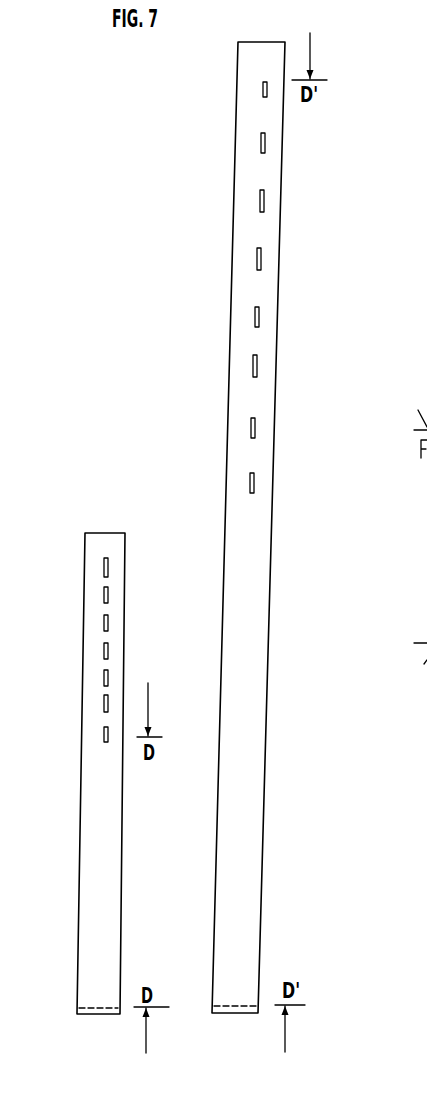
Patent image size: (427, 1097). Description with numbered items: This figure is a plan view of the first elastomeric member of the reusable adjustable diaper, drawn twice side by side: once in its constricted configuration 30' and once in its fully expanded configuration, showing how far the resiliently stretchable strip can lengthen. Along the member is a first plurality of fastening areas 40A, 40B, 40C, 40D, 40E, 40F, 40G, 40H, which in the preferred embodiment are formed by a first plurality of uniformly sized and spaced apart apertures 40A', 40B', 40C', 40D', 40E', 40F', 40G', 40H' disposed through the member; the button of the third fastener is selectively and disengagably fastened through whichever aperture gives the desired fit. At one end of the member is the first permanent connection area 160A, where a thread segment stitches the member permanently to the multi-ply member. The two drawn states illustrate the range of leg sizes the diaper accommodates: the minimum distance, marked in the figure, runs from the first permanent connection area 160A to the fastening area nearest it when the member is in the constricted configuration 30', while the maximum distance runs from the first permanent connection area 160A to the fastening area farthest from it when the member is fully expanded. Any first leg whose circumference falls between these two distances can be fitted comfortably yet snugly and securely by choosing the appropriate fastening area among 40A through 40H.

The constricted configuration 30' is at (85, 703).
The fastening area 40A is at (141, 556).
The fastening area 40B is at (141, 521).
The fastening area 40C is at (180, 488).
The fastening area 40D is at (181, 453).
The fastening area 40E is at (182, 421).
The fastening area 40F is at (184, 386).
The fastening area 40G is at (184, 345).
The fastening area 40H is at (187, 299).
The aperture 40A' is at (192, 622).
The aperture 40B' is at (309, 439).
The aperture 40C' is at (312, 382).
The aperture 40D' is at (316, 325).
The aperture 40E' is at (317, 259).
The aperture 40F' is at (332, 195).
The aperture 40G' is at (337, 146).
The aperture 40H' is at (222, 343).
The first permanent connection area 160A is at (103, 1007).